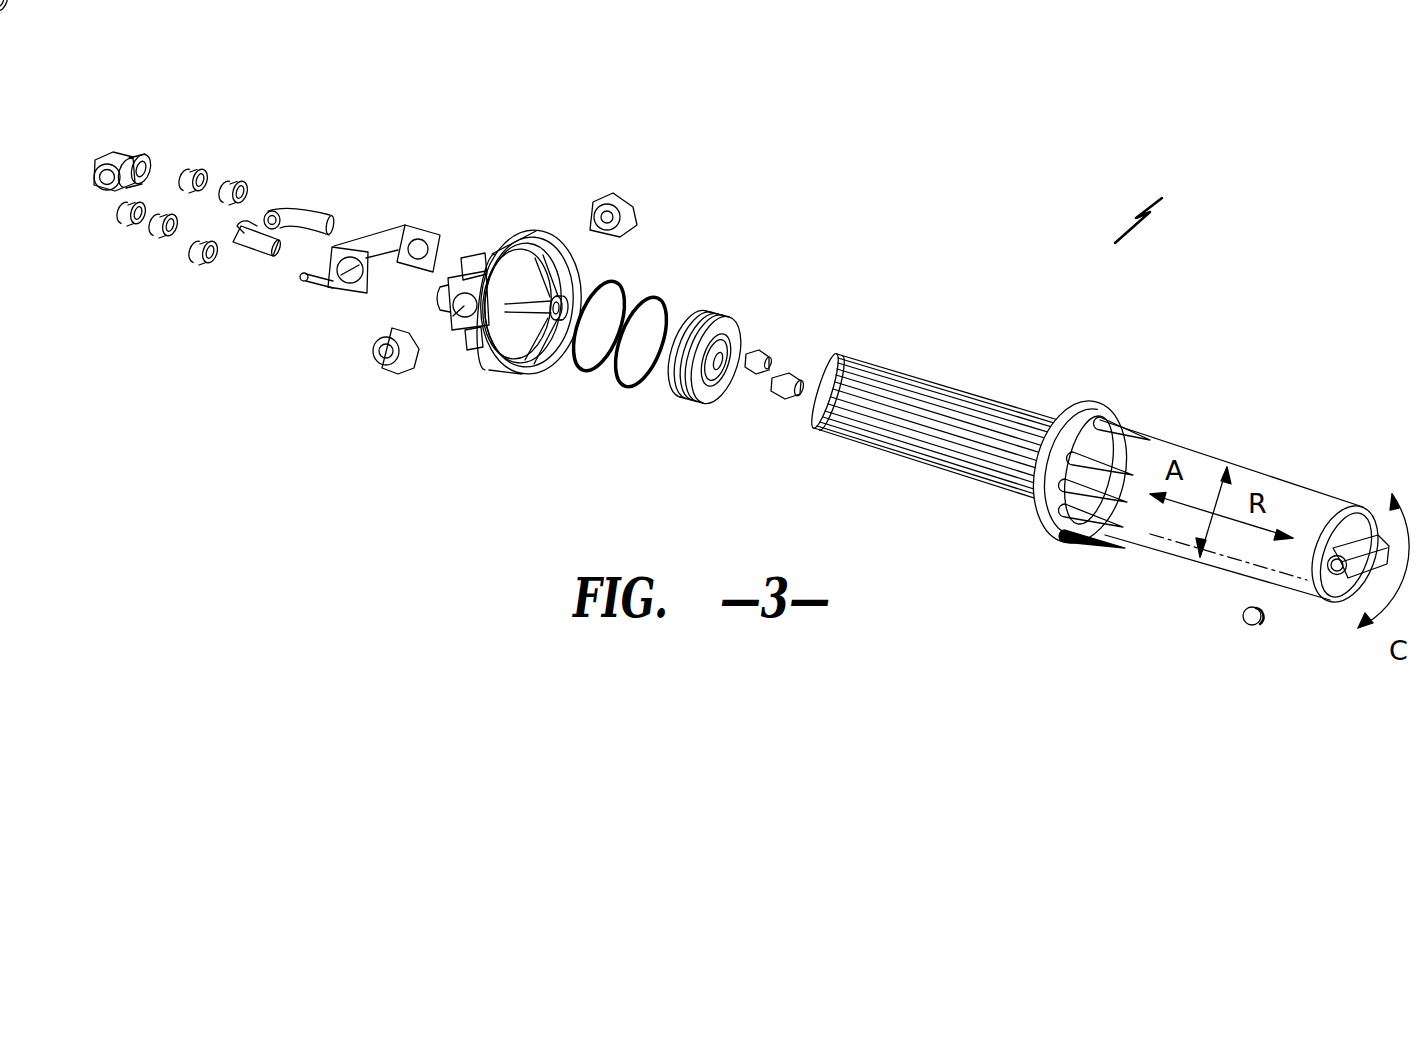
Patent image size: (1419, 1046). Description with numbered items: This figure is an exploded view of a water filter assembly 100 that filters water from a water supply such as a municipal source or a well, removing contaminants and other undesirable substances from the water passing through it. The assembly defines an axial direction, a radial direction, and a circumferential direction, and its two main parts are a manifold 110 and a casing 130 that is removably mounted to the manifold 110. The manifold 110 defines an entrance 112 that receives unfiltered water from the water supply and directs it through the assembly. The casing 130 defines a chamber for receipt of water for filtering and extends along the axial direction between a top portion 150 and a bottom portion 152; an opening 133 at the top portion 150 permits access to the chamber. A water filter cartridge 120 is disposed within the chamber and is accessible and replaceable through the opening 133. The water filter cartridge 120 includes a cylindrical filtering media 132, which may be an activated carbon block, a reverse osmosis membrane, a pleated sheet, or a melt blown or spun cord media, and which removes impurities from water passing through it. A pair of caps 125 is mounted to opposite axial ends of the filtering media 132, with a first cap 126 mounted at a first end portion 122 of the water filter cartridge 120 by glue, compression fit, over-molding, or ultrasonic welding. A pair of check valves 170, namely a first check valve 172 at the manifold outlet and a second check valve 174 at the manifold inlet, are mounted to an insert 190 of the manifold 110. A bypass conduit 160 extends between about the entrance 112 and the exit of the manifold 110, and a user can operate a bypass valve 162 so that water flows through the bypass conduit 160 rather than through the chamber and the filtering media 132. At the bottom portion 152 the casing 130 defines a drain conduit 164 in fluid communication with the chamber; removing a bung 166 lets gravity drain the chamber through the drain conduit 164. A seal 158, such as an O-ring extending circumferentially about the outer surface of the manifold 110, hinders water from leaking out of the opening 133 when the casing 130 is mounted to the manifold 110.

The water filter assembly 100 is at (1165, 206).
The manifold 110 is at (491, 256).
The entrance 112 is at (452, 313).
The water filter cartridge 120 is at (919, 406).
The first end portion 122 is at (850, 342).
The caps 125 is at (828, 348).
The first cap 126 is at (812, 430).
The casing 130 is at (1181, 540).
The filtering media 132 is at (945, 440).
The opening 133 is at (1026, 509).
The top portion 150 is at (1092, 392).
The bottom portion 152 is at (1367, 500).
The seal 158 is at (608, 283).
The bypass conduit 160 is at (286, 212).
The bypass valve 162 is at (118, 157).
The drain conduit 164 is at (1333, 570).
The bung 166 is at (1246, 618).
The check valves 170 is at (774, 362).
The first check valve 172 is at (759, 350).
The second check valve 174 is at (785, 377).
The insert 190 is at (698, 318).